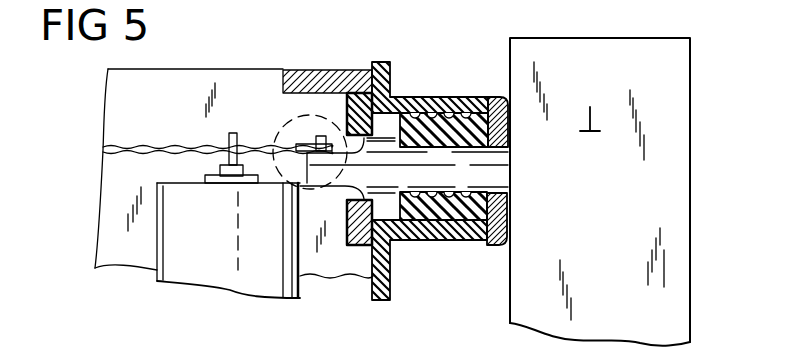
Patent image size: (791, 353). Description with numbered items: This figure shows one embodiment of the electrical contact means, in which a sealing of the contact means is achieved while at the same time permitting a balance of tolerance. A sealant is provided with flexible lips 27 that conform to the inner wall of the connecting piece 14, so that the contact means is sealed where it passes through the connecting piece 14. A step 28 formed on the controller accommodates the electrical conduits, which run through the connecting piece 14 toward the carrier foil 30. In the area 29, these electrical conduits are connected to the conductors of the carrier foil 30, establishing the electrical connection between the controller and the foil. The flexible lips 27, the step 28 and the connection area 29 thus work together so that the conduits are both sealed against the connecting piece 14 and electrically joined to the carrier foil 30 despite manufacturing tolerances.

The carrier foil 30 is at (163, 145).
The area 29 is at (286, 124).
The flexible lips 27 is at (445, 115).
The step 28 is at (497, 163).
The connecting piece 14 is at (447, 232).